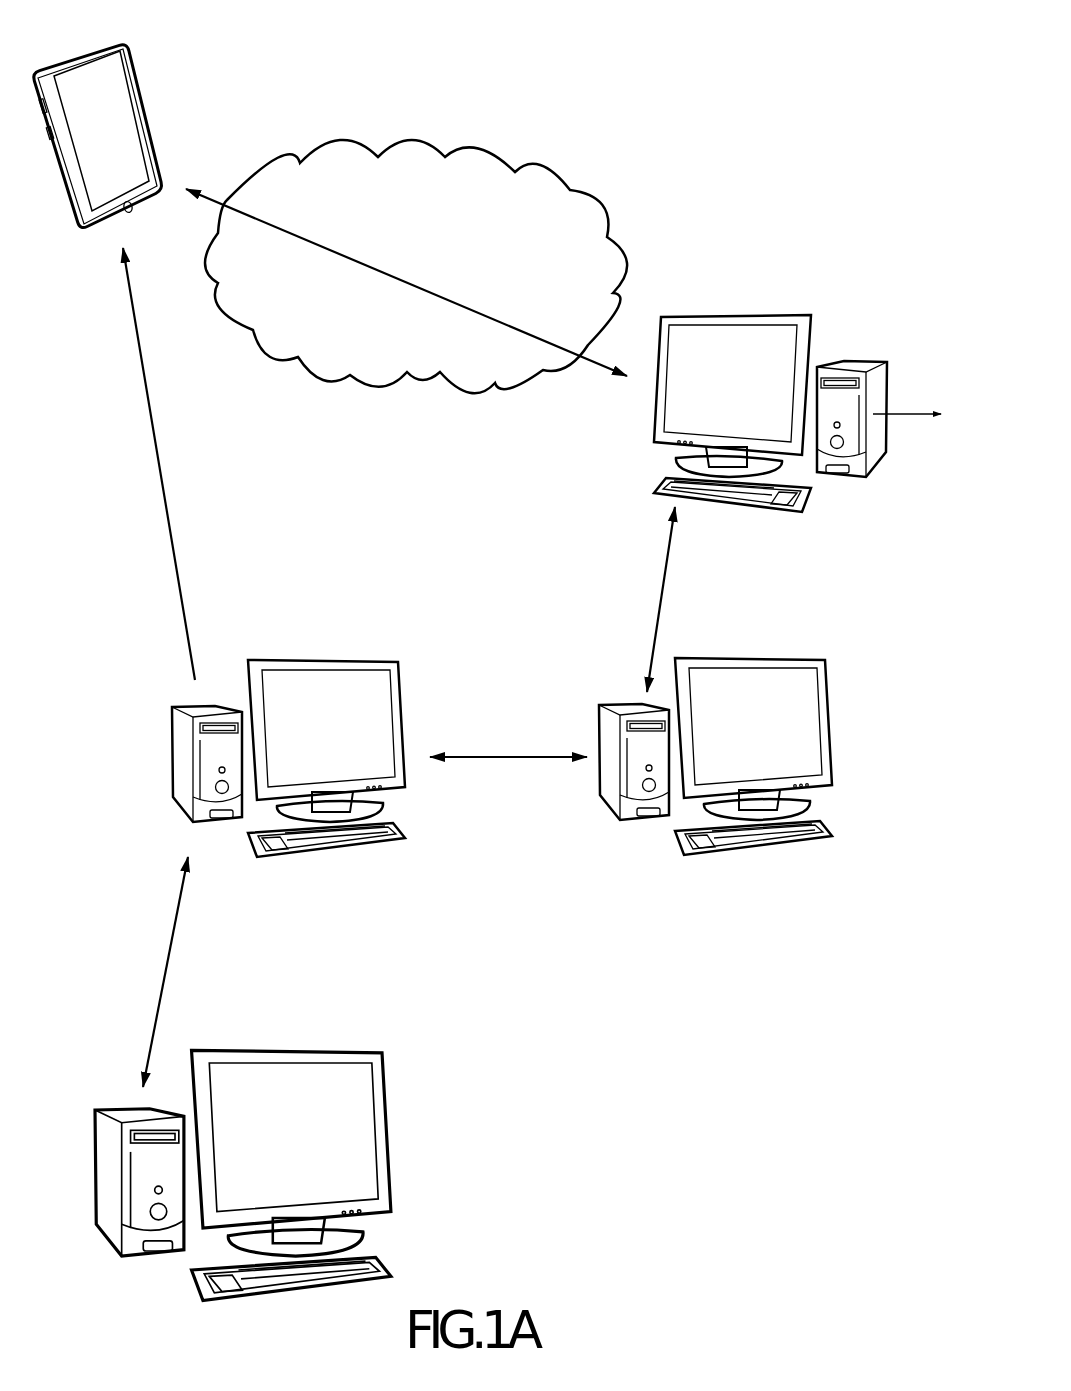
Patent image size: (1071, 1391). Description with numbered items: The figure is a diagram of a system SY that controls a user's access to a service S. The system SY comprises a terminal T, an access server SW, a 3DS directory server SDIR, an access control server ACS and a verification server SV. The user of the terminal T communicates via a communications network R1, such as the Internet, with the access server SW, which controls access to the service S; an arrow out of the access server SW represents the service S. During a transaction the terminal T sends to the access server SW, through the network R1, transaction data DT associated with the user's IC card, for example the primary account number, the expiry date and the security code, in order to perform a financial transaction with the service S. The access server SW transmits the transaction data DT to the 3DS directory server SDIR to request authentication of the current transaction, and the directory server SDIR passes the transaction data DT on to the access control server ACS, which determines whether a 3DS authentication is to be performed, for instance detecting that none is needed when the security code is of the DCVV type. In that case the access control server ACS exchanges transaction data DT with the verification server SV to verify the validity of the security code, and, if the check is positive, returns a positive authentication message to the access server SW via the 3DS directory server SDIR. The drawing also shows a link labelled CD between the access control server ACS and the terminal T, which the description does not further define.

The terminal T is at (64, 60).
The communications network R1 is at (480, 156).
The transaction data DT is at (365, 256).
The command CD is at (168, 433).
The access server SW is at (770, 300).
The service S is at (907, 402).
The system SY is at (440, 528).
The access control server ACS is at (311, 648).
The 3DS directory server SDIR is at (773, 648).
The verification server SV is at (262, 1030).